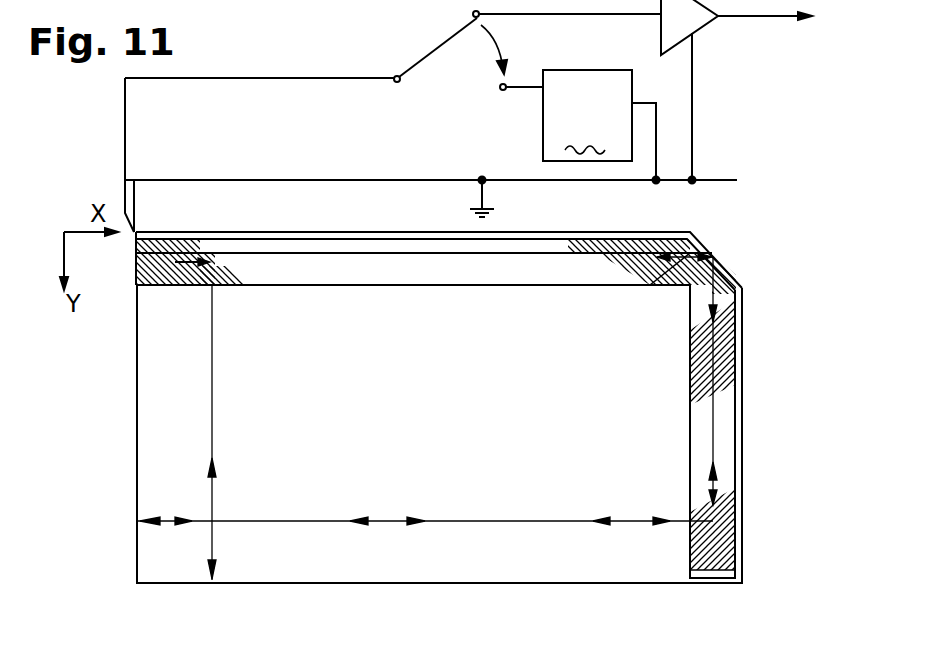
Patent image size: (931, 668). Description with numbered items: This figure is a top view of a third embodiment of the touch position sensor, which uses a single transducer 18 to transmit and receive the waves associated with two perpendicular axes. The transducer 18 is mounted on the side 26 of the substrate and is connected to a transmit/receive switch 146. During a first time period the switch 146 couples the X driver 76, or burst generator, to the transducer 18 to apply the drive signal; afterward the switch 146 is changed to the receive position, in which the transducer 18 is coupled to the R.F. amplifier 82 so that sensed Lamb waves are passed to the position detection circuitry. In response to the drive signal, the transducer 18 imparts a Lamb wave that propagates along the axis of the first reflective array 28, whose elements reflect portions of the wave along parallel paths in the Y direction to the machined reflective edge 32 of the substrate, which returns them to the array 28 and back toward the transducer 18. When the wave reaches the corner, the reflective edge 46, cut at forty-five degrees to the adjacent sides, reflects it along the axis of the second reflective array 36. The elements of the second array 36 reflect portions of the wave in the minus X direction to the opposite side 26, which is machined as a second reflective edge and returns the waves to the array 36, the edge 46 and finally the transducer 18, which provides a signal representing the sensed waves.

The transducer 18 is at (134, 269).
The side of substrate 26 is at (138, 429).
The reflective array 28 is at (166, 287).
The reflective edge of substrate 32 is at (653, 587).
The second reflective array 36 is at (722, 400).
The reflective edge 46 is at (725, 270).
The X driver 76 is at (543, 137).
The R.F. amplifier 82 is at (694, 22).
The transmit/receive switch 146 is at (425, 52).